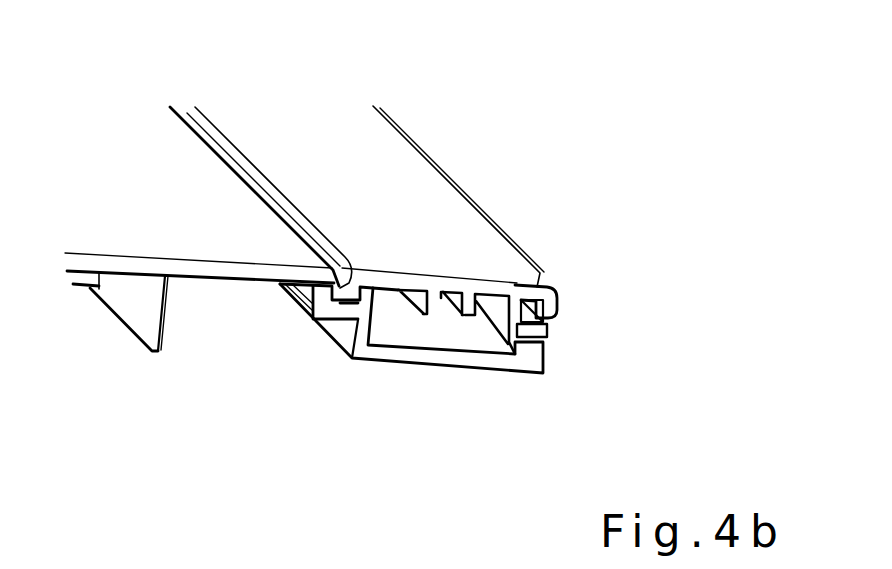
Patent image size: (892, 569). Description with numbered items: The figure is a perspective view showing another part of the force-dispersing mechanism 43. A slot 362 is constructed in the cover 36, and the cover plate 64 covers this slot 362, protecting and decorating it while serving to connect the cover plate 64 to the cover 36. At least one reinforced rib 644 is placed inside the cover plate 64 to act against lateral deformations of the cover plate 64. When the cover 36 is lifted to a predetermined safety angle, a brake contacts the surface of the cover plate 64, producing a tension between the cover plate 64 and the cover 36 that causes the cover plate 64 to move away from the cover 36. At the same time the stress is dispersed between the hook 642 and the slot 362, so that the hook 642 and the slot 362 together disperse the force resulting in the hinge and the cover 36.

The cover 36 is at (176, 236).
The force-dispersing mechanism 43 is at (556, 143).
The cover plate 64 is at (410, 155).
The slot 362 is at (562, 343).
The hook 642 is at (532, 287).
The reinforced rib 644 is at (432, 299).